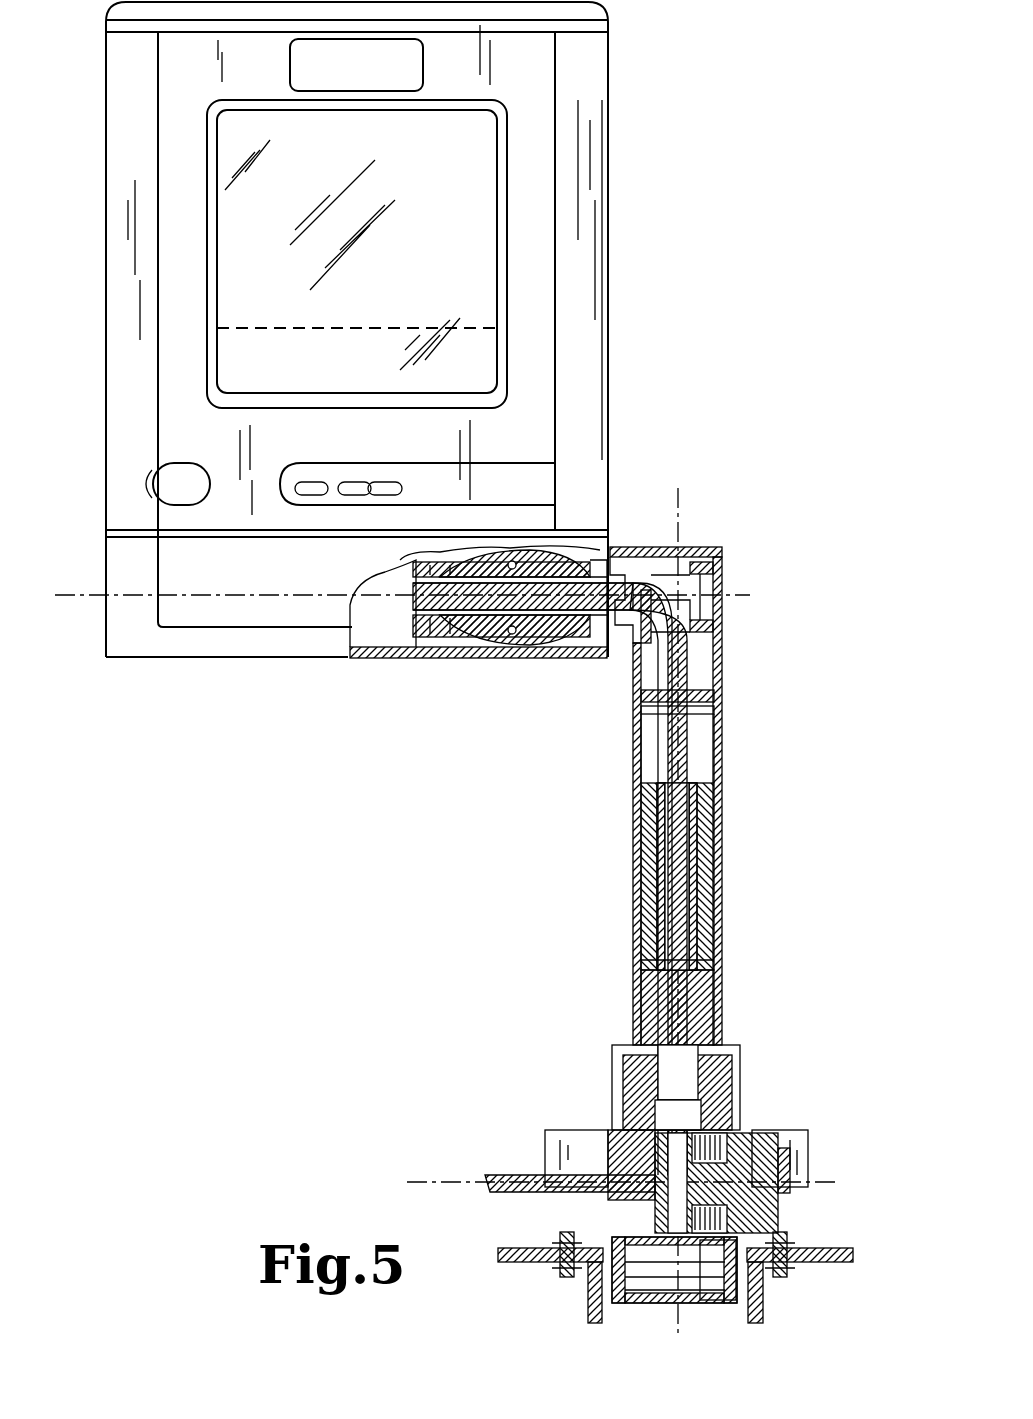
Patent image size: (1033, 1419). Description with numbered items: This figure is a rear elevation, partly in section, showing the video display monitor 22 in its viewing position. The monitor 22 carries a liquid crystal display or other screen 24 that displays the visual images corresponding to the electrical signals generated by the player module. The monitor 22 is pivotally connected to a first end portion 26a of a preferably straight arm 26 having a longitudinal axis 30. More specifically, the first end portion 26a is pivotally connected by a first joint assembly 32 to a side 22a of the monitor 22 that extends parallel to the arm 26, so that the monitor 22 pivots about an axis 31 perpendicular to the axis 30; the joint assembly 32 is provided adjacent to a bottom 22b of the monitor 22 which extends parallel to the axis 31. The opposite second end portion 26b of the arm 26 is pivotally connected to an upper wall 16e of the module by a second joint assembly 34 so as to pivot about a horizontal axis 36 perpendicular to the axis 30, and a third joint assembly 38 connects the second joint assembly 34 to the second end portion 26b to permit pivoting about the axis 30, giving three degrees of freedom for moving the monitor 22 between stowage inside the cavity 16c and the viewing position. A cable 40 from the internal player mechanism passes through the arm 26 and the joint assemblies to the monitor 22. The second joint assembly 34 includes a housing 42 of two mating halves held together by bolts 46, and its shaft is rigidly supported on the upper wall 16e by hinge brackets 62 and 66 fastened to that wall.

The video display monitor 22 is at (632, 268).
The screen 24 is at (481, 210).
The side of the monitor 22a is at (605, 368).
The bottom of the monitor 22b is at (258, 660).
The longitudinal axis 30 is at (680, 507).
The axis 31 is at (72, 593).
The first end portion 26a is at (745, 580).
The arm 26 is at (742, 782).
The third joint assembly 38 is at (740, 890).
The second end portion 26b is at (740, 968).
The cable 40 is at (398, 648).
The first joint assembly 32 is at (515, 675).
The housing 42 is at (742, 1060).
The bolts 46 is at (742, 1095).
The second joint assembly 34 is at (798, 1118).
The axis 36 is at (423, 1182).
The hinge bracket 62 is at (560, 1240).
The hinge bracket 66 is at (790, 1240).
The upper wall 16e is at (517, 1263).
The cavity 16c is at (633, 1322).